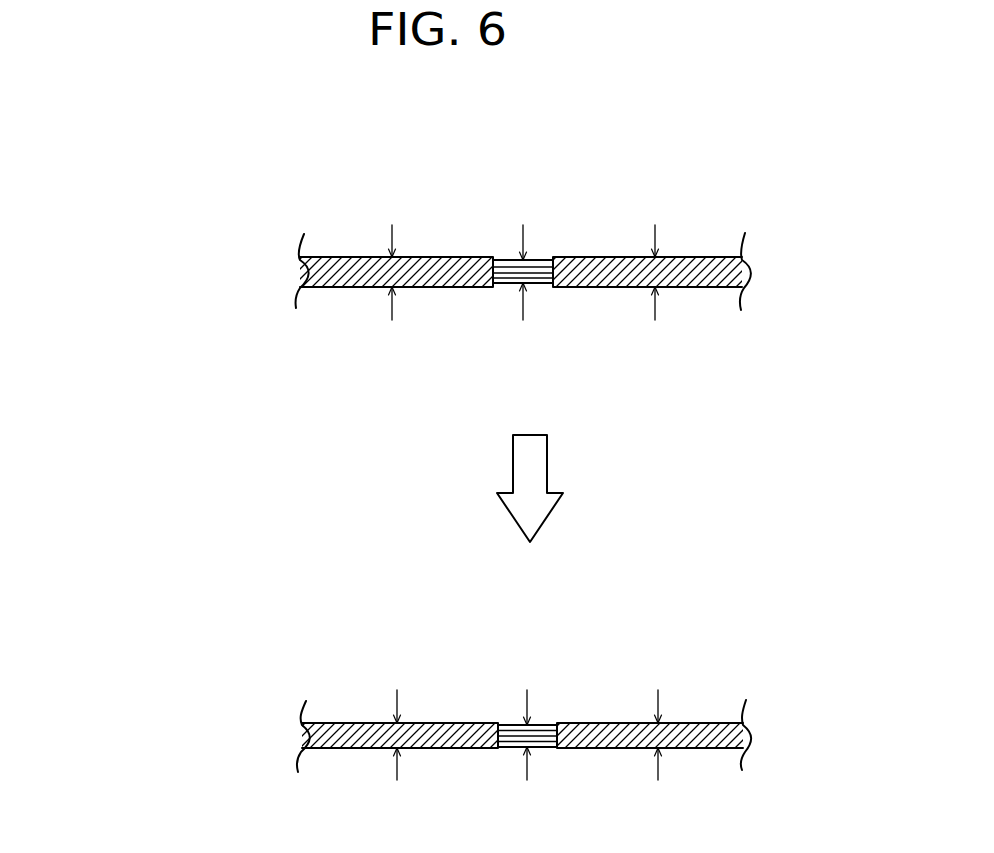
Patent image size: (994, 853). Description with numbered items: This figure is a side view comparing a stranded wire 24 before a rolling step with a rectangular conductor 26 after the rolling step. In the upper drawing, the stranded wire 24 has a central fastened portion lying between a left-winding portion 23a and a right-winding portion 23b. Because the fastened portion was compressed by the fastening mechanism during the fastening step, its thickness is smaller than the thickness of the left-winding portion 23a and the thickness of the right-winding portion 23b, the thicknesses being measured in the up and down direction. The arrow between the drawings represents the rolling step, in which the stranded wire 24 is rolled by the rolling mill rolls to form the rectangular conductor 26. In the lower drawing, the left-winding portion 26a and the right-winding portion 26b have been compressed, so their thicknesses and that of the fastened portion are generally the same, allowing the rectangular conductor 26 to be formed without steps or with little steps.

The stranded wire 24 is at (242, 212).
The left-winding portion 23a is at (348, 257).
The right-winding portion 23b is at (696, 257).
The rectangular conductor 26 is at (225, 678).
The left-winding portion 26a is at (354, 723).
The right-winding portion 26b is at (700, 723).